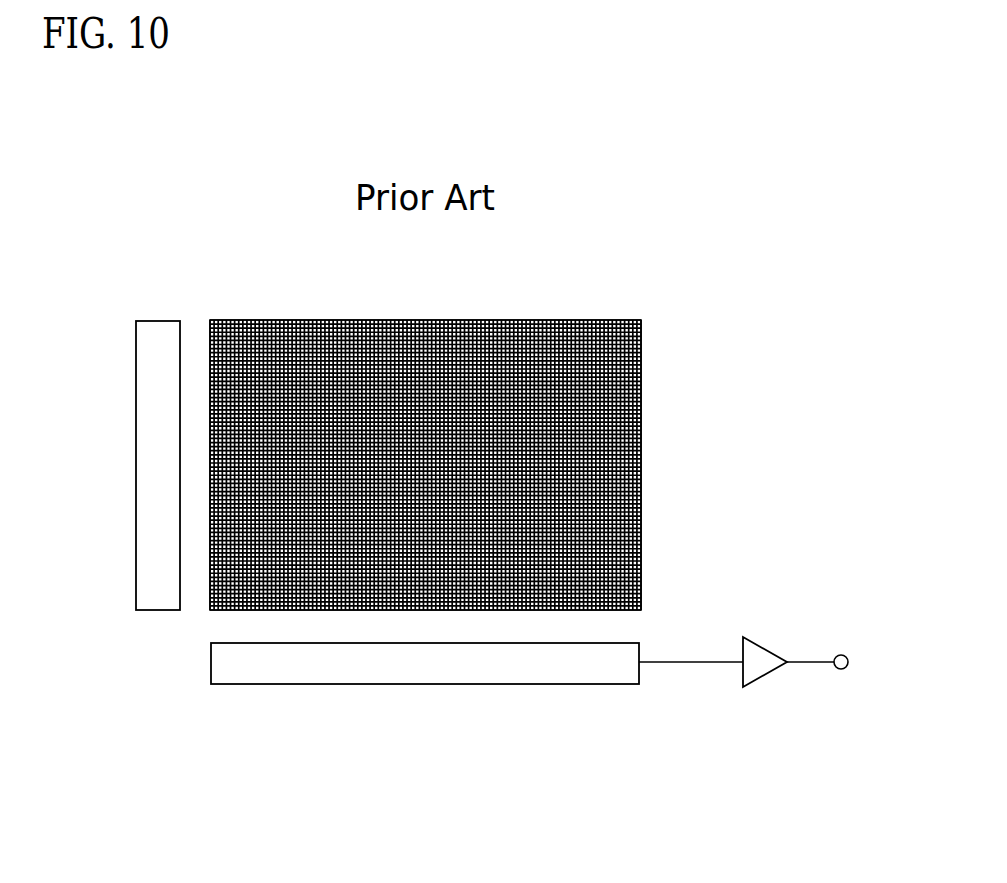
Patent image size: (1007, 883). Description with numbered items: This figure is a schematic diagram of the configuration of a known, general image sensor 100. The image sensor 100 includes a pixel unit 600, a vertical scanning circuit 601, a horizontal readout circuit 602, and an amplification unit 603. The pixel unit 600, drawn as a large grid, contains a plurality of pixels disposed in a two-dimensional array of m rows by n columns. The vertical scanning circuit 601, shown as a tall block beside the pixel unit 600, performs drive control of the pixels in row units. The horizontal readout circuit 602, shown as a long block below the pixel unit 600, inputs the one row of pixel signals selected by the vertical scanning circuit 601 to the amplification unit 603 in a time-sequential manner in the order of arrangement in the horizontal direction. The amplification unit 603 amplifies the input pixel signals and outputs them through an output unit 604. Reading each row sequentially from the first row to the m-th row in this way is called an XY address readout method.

The image sensor 100 is at (617, 286).
The pixel unit 600 is at (618, 475).
The vertical scanning circuit 601 is at (136, 465).
The horizontal readout circuit 602 is at (422, 684).
The amplification unit 603 is at (767, 647).
The output unit 604 is at (841, 670).